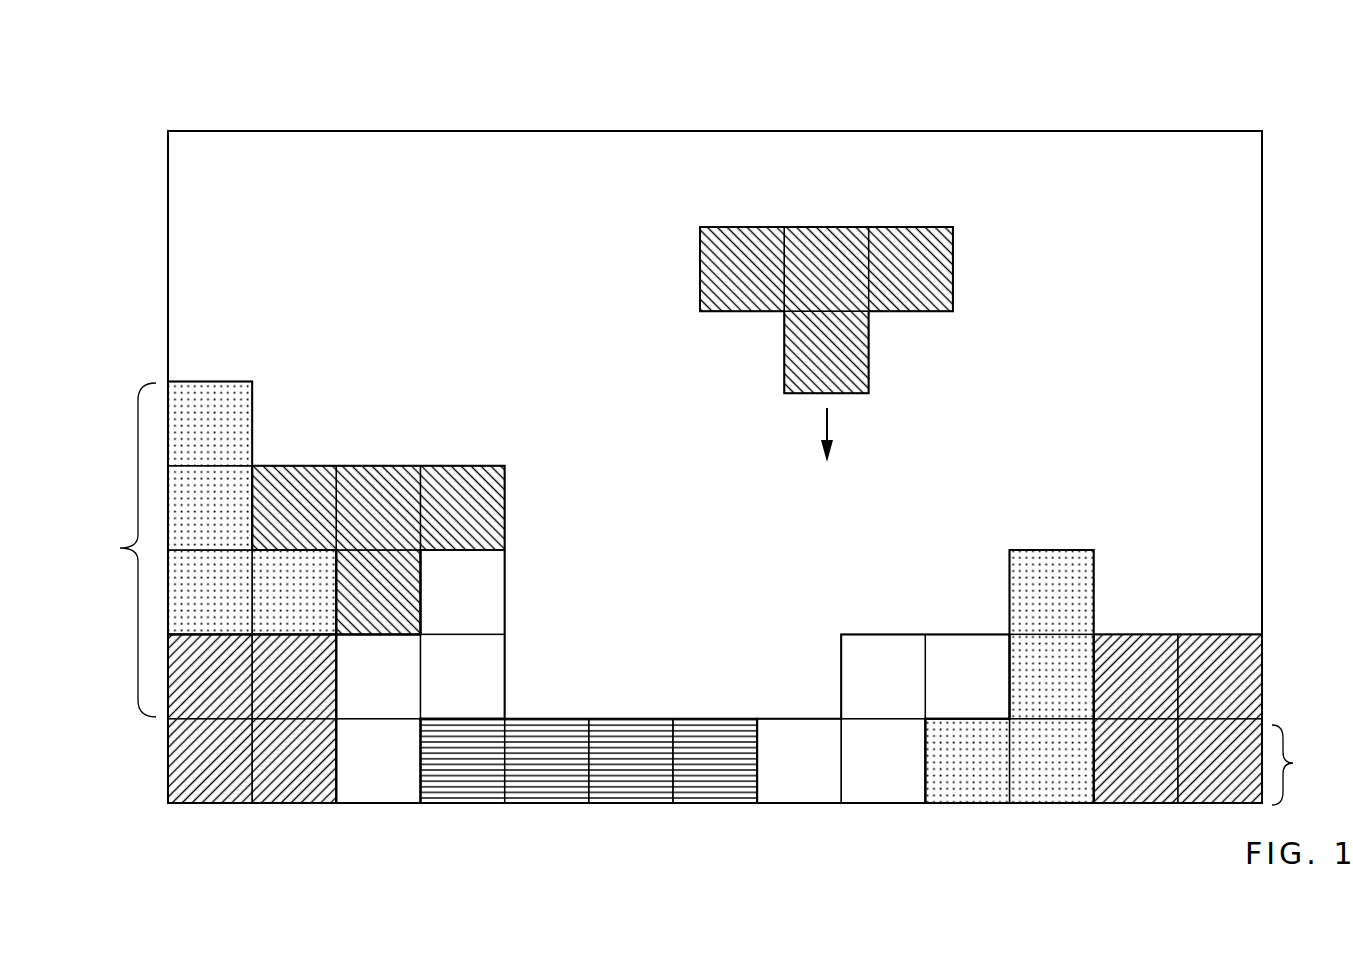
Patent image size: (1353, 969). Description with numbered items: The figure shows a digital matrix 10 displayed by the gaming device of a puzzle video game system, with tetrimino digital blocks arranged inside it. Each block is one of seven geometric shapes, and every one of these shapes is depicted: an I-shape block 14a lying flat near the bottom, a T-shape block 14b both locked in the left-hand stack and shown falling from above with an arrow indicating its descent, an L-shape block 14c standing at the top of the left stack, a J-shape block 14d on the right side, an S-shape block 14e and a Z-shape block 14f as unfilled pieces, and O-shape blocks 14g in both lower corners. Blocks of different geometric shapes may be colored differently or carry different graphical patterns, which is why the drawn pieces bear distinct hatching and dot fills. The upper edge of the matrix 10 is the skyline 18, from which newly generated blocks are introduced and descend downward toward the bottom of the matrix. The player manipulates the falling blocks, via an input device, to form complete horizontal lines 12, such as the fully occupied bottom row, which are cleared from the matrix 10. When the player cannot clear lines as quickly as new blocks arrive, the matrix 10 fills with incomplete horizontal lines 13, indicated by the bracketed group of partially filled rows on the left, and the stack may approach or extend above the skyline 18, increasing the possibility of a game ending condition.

The digital matrix 10 is at (1298, 121).
The complete horizontal lines 12 is at (1299, 765).
The incomplete horizontal lines 13 is at (120, 550).
The I-shape block 14a is at (580, 803).
The T-shape block 14b is at (440, 465).
The L-shape block 14c is at (232, 381).
The J-shape block 14d is at (1030, 803).
The S-shape block 14e is at (905, 634).
The Z-shape block 14f is at (505, 605).
The O-shape block 14g is at (215, 803).
The skyline 18 is at (176, 122).